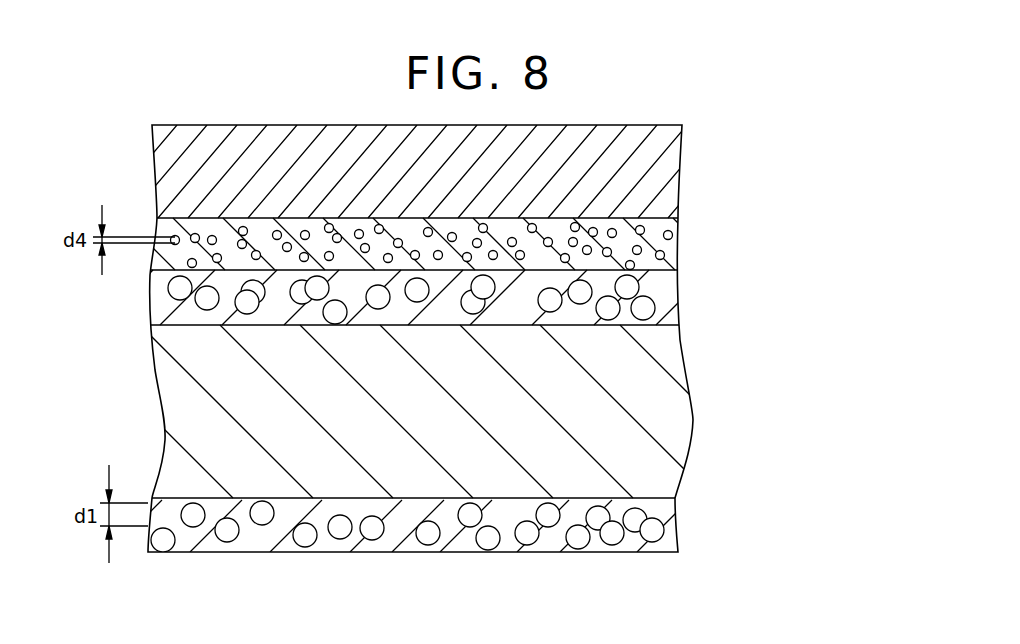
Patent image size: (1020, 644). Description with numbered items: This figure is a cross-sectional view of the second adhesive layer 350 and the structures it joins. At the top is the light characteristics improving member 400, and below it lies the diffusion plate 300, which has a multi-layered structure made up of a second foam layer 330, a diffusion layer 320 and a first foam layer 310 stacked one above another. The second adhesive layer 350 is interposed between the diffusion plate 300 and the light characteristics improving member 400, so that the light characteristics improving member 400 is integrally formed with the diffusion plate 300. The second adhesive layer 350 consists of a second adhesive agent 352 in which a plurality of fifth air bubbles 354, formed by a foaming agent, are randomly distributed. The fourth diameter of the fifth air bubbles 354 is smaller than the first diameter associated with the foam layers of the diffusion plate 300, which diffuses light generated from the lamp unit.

The light characteristics improving member 400 is at (668, 168).
The second adhesive layer 350 is at (483, 239).
The fifth air bubbles 354 is at (672, 233).
The second adhesive agent 352 is at (665, 250).
The diffusion plate 300 is at (462, 411).
The second foam layer 330 is at (680, 295).
The diffusion layer 320 is at (695, 413).
The first foam layer 310 is at (453, 526).